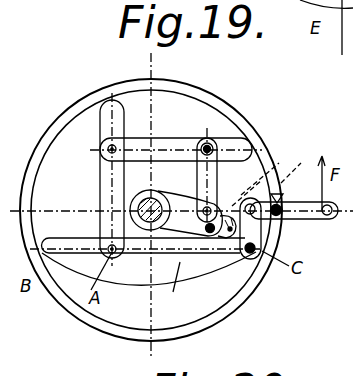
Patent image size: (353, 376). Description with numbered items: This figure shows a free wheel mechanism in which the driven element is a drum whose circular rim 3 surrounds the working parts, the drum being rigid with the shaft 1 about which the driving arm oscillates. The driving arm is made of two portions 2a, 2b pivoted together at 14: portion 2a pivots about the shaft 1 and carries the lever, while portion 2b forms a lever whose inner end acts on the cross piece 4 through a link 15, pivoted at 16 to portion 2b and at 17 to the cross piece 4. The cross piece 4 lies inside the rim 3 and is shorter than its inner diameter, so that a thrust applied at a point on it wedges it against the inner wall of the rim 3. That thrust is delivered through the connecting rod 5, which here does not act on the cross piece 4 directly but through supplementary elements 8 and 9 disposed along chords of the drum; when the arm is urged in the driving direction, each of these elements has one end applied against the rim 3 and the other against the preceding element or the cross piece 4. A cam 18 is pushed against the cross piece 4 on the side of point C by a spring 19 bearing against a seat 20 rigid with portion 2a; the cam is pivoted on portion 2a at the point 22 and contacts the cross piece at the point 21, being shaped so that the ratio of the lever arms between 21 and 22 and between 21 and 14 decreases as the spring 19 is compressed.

The shaft 1 is at (147, 198).
The portion of arm 2a is at (187, 211).
The portion of arm 2b is at (305, 221).
The rim 3 is at (214, 108).
The cross piece 4 is at (167, 289).
The connecting rod 5 is at (213, 178).
The supplementary element 8 is at (110, 172).
The supplementary element 9 is at (183, 150).
The pivot 14 is at (281, 218).
The link 15 is at (236, 226).
The pivot 16 is at (267, 172).
The pivot 17 is at (256, 258).
The cam 18 is at (212, 233).
The spring 19 is at (272, 192).
The seat 20 is at (265, 152).
The point of contact 21 is at (212, 272).
The point of pivoting 22 is at (104, 238).